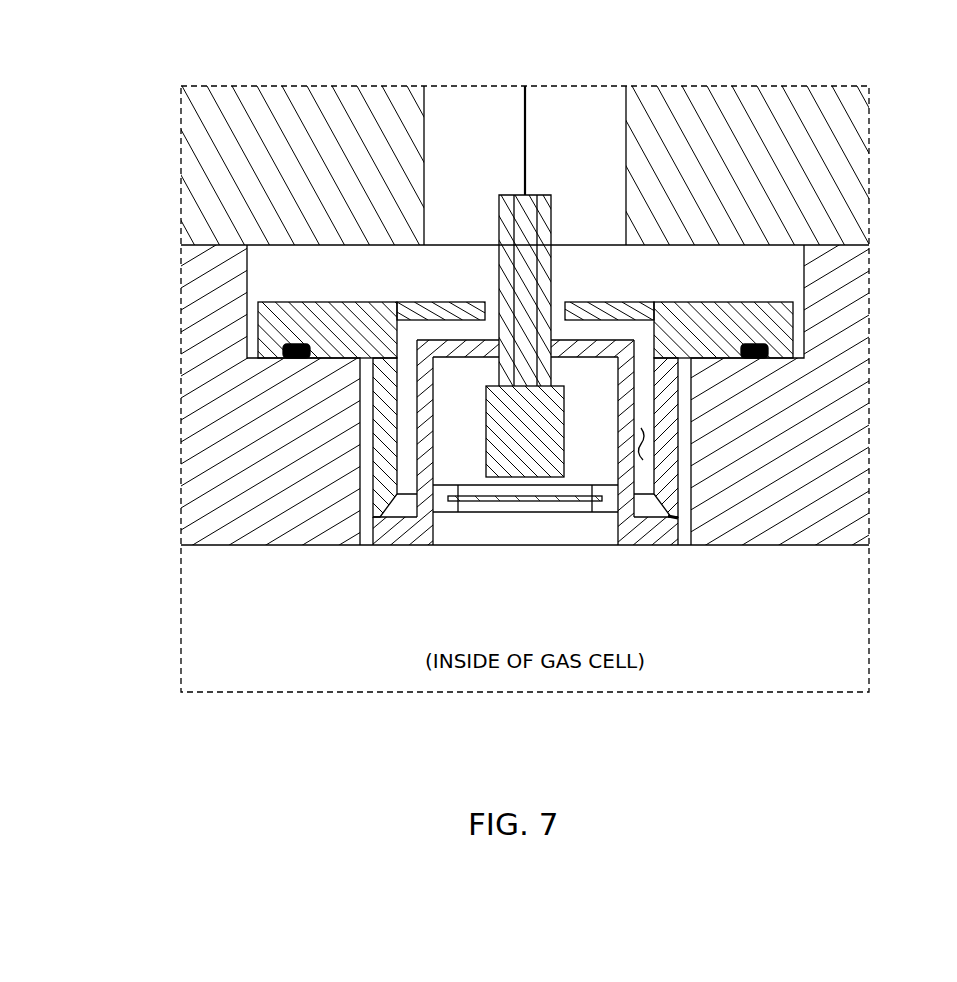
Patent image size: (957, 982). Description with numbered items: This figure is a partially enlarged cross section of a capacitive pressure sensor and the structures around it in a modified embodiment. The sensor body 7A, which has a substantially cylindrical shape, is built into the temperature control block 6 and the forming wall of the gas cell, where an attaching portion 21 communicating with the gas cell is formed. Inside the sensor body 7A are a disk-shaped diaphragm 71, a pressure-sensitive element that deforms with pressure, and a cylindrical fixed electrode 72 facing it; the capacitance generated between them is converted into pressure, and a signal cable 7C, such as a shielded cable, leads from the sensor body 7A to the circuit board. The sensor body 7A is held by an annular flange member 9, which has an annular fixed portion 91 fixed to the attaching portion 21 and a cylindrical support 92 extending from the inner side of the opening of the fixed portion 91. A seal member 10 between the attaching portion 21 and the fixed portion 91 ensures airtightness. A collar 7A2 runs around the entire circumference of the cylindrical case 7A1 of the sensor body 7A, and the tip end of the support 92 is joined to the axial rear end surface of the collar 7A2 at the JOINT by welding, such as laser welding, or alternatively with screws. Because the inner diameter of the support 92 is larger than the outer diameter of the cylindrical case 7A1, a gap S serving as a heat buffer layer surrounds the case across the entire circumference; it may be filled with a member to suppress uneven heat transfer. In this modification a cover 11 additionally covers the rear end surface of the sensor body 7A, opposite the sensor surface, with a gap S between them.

The temperature control block 6 is at (298, 97).
The signal cable 7C is at (524, 135).
The flange member 9 is at (460, 474).
The attaching portion 21 is at (247, 302).
The fixed portion 91 is at (258, 330).
The support 92 is at (373, 432).
The seal member 10 is at (768, 352).
The cover 11 is at (447, 300).
The sensor body 7A is at (479, 448).
The cylindrical case 7A1 is at (417, 442).
The collar 7A2 is at (395, 530).
The fixed electrode 72 is at (552, 477).
The diaphragm 71 is at (510, 500).
The gap S is at (648, 452).
The joint JOINT is at (679, 528).